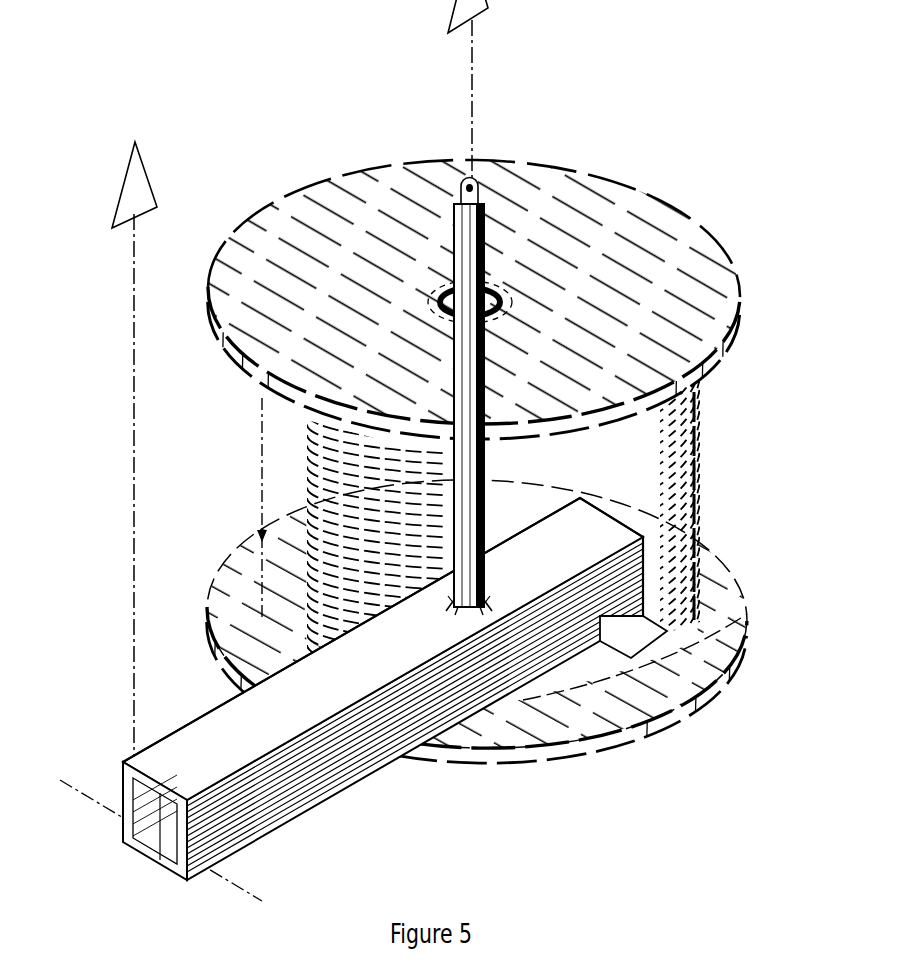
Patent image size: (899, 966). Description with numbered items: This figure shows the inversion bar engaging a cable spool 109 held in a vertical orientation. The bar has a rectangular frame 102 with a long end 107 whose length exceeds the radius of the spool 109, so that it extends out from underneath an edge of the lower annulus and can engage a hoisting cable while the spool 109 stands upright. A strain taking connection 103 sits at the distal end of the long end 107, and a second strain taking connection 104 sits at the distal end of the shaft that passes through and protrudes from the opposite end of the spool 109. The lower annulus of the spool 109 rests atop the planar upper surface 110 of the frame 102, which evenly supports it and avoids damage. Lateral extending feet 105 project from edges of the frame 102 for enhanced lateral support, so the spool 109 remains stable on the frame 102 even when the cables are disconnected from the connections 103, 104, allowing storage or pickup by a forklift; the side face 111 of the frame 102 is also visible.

The frame 102 is at (582, 501).
The strain taking connection 103 is at (118, 812).
The strain taking connection 104 is at (474, 181).
The lateral extending feet 105 is at (624, 632).
The long end 107 is at (190, 659).
The spool 109 is at (688, 208).
The upper surface 110 is at (200, 730).
The arm side surface 111 is at (343, 791).